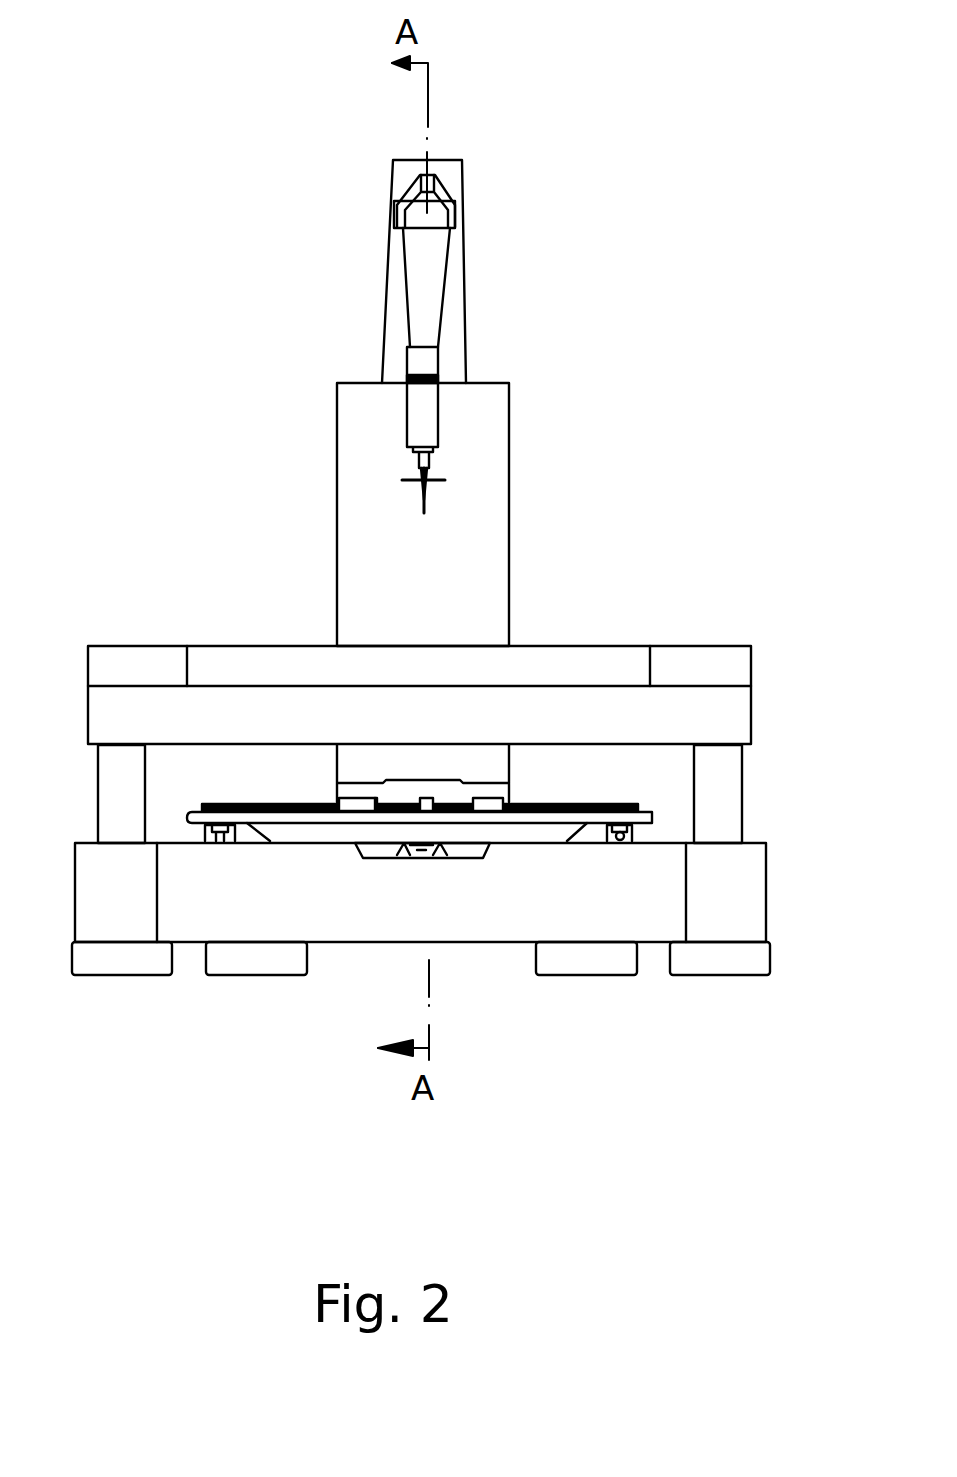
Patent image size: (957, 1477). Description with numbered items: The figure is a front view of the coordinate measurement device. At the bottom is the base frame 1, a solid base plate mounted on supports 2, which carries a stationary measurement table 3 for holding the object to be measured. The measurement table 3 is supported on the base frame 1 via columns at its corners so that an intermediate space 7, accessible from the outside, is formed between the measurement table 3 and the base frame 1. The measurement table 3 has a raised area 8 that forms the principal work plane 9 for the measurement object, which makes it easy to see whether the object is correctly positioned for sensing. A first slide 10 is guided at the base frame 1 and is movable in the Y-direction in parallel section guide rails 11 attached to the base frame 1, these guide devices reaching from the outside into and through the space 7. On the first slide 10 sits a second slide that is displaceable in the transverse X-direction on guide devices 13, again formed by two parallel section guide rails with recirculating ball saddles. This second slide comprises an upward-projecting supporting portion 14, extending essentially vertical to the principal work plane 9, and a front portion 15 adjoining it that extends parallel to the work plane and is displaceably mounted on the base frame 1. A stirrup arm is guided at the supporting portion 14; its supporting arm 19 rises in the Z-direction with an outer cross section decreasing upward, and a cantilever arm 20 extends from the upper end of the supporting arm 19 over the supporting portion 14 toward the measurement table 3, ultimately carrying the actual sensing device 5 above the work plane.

The base frame 1 is at (314, 923).
The supports 2 is at (242, 962).
The measurement table 3 is at (565, 718).
The sensing device 5 is at (422, 410).
The intermediate space 7 is at (668, 773).
The raised area 8 is at (557, 660).
The principal work plane 9 is at (727, 643).
The first slide 10 is at (530, 828).
The section guide rails 11 is at (623, 840).
The guide devices 13 is at (242, 803).
The supporting portion 14 is at (490, 494).
The front portion 15 is at (360, 790).
The supporting arm 19 is at (452, 278).
The cantilever arm 20 is at (442, 193).